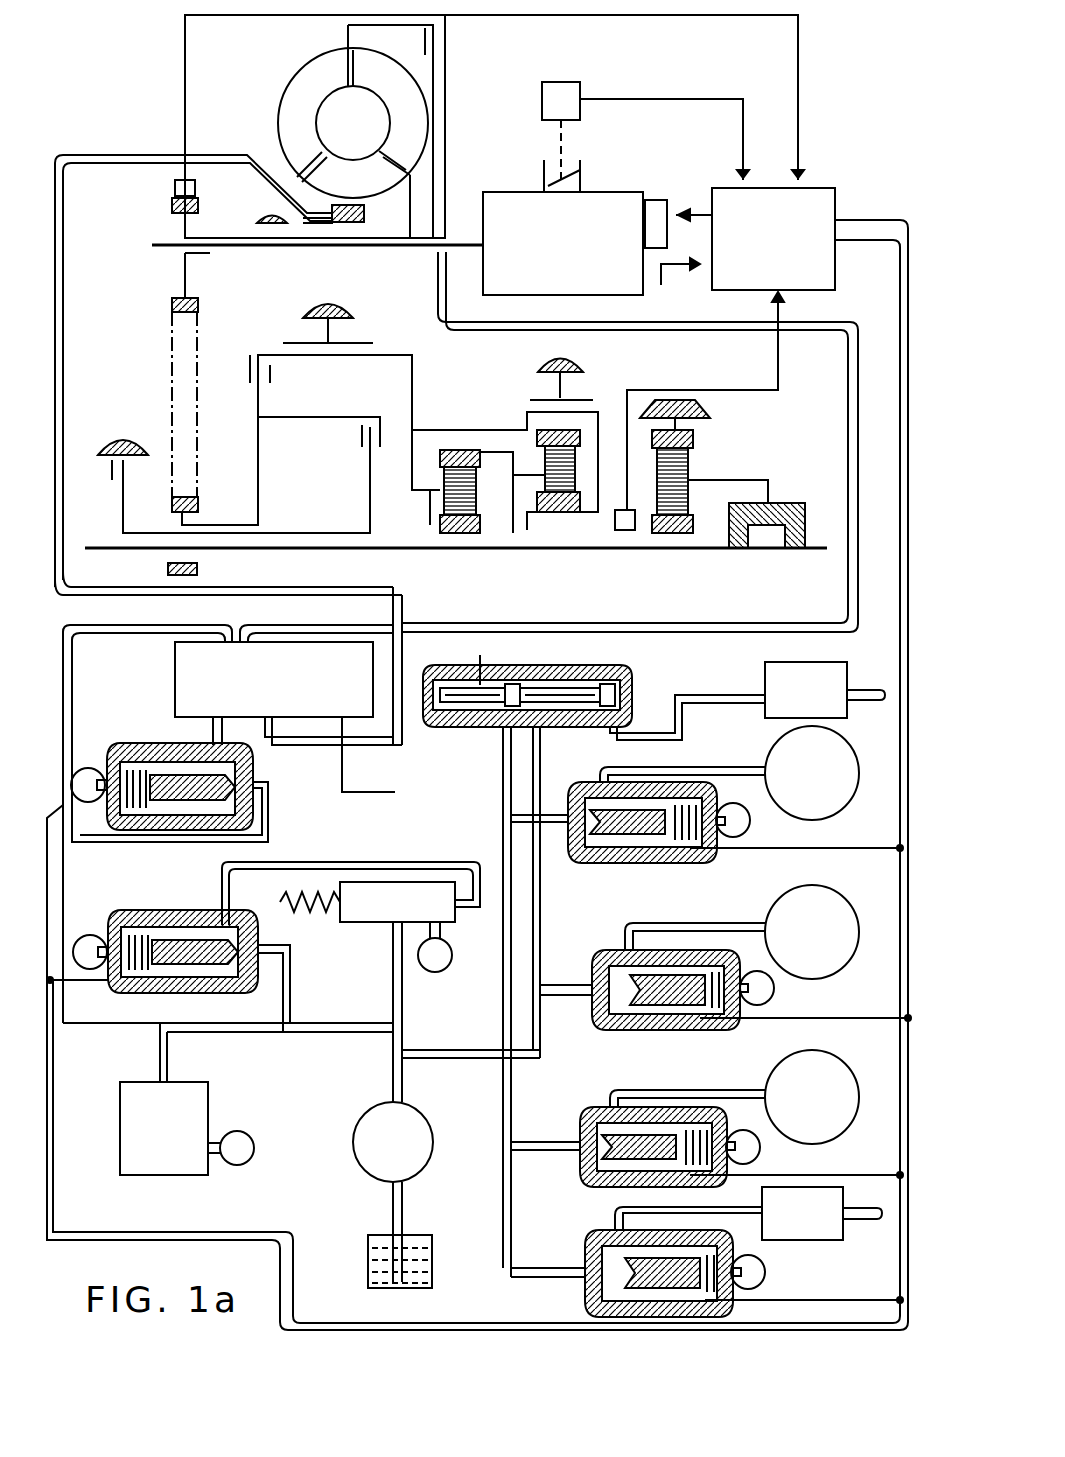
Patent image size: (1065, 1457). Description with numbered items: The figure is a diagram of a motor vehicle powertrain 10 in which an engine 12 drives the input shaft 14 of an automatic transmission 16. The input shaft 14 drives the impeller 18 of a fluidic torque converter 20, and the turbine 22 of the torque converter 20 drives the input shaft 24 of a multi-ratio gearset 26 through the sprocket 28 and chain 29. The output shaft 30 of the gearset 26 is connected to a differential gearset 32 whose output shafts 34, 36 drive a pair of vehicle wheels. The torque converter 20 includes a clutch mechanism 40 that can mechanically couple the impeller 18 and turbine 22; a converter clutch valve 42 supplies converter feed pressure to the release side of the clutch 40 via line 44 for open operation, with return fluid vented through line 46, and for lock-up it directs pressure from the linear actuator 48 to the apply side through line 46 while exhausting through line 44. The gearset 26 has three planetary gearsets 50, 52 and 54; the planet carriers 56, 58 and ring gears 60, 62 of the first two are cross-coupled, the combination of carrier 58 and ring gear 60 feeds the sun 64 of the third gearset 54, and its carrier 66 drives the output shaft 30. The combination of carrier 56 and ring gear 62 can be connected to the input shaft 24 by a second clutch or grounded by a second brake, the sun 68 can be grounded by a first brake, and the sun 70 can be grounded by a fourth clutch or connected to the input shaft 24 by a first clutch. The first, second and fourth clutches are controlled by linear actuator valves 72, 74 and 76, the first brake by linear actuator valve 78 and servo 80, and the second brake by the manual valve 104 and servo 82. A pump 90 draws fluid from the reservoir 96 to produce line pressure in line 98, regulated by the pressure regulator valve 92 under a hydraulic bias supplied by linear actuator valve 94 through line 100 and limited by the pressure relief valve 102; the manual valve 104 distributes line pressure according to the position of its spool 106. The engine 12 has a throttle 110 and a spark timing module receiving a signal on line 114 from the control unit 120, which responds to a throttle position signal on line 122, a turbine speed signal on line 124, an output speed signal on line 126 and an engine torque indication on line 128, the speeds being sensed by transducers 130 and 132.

The motor vehicle powertrain 10 is at (148, 58).
The engine 12 is at (565, 293).
The input shaft 14 is at (350, 250).
The automatic transmission 16 is at (862, 440).
The impeller 18 is at (315, 83).
The fluidic torque converter 20 is at (282, 28).
The turbine 22 is at (405, 80).
The input shaft 24 is at (235, 525).
The multi-ratio gearset 26 is at (345, 297).
The sprocket 28 is at (170, 208).
The chain 29 is at (165, 405).
The output shaft 30 is at (766, 480).
The differential gearset 32 is at (790, 505).
The output shaft 34 is at (670, 550).
The output shaft 36 is at (810, 548).
The clutch mechanism 40 is at (437, 198).
The converter clutch valve 42 is at (175, 708).
The line 44 is at (540, 335).
The line 46 is at (150, 160).
The linear actuator 48 is at (245, 760).
The planetary gearset 50 is at (425, 523).
The planetary gearset 52 is at (520, 505).
The planetary gearset 54 is at (705, 510).
The planet carrier 56 is at (440, 505).
The planet carrier 58 is at (510, 470).
The ring gear 60 is at (450, 452).
The ring gear 62 is at (540, 430).
The sun gear 64 is at (665, 530).
The carrier 66 is at (700, 478).
The sun gear 68 is at (573, 515).
The sun gear 70 is at (468, 535).
The linear actuator valve 72 is at (598, 968).
The linear actuator valve 74 is at (575, 805).
The linear actuator valve 76 is at (590, 1125).
The linear actuator valve 78 is at (590, 1262).
The fluid operated servo 80 is at (835, 1240).
The fluid operated servo 82 is at (775, 665).
The pump 90 is at (355, 1128).
The pressure regulator valve 92 is at (365, 922).
The linear actuator valve 94 is at (171, 952).
The reservoir 96 is at (368, 1240).
The line 98 is at (405, 1045).
The line 100 is at (370, 862).
The pressure relief valve 102 is at (120, 1130).
The manual valve 104 is at (480, 727).
The valve spool 106 is at (615, 700).
The throttle 110 is at (575, 175).
The line 114 is at (695, 212).
The control unit 120 is at (836, 200).
The line 122 is at (700, 97).
The line 124 is at (805, 95).
The line 126 is at (655, 390).
The line 128 is at (675, 270).
The turbine speed transducer 130 is at (173, 188).
The output speed transducer 132 is at (615, 532).